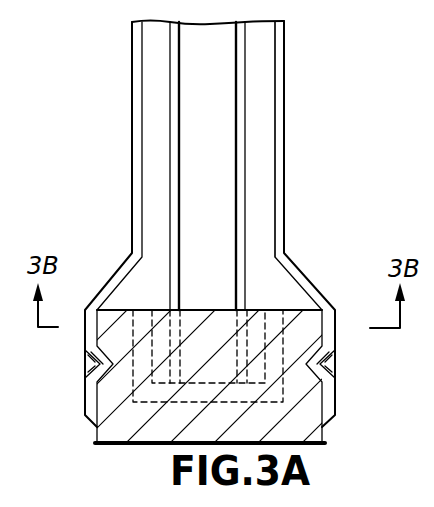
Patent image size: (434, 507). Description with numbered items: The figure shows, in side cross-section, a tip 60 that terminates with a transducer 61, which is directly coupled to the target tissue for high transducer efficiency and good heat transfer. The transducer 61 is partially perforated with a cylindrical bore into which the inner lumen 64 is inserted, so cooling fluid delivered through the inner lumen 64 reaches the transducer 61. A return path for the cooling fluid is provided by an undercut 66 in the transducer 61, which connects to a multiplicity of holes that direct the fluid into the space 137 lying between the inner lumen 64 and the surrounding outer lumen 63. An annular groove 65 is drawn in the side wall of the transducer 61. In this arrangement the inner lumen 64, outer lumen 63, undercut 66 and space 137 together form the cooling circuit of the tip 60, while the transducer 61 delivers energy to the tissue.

The tip 60 is at (313, 129).
The transducer 61 is at (303, 423).
The outer lumen 63 is at (132, 95).
The inner lumen 64 is at (171, 155).
The annular groove 65 is at (92, 367).
The undercut 66 is at (183, 393).
The space 137 is at (260, 215).